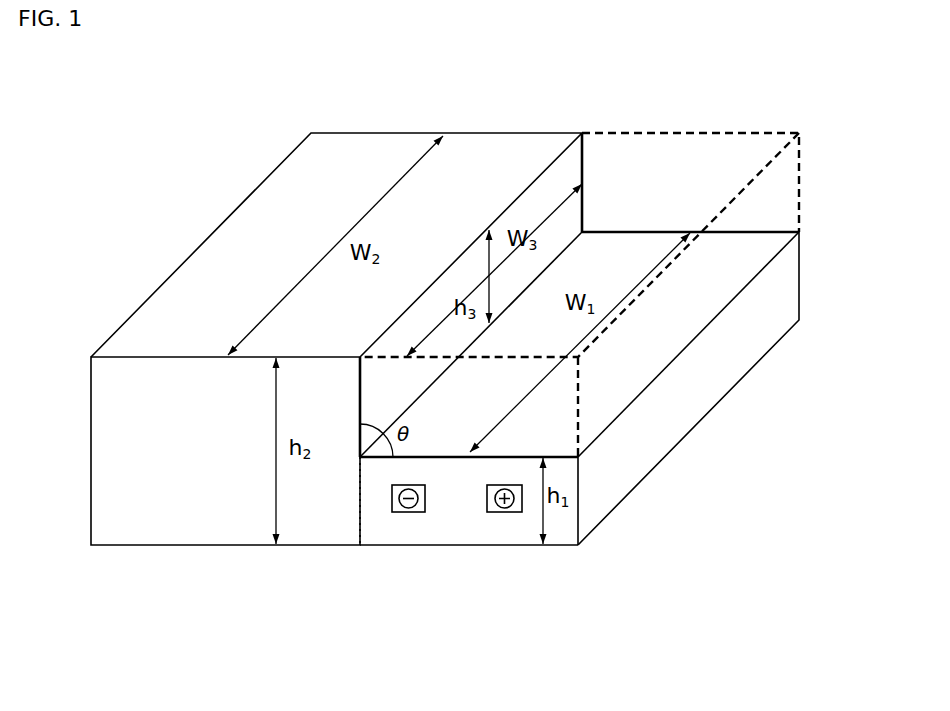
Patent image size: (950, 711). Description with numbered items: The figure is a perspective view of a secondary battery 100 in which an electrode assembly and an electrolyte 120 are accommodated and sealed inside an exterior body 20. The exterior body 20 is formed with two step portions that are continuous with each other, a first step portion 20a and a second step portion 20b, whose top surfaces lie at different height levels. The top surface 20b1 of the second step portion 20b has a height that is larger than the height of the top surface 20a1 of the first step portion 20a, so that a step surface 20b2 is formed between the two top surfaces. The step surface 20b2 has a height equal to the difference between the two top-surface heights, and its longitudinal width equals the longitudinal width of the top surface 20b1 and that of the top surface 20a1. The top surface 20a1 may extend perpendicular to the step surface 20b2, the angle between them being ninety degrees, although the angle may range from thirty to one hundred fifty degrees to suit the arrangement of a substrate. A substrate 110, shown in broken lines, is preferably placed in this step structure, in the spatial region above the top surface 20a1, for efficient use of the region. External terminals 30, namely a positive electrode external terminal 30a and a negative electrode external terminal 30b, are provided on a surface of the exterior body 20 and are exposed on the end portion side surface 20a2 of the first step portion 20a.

The secondary battery 100 is at (503, 105).
The substrate 110 is at (703, 132).
The electrolyte 120 is at (145, 520).
The exterior body 20 is at (660, 348).
The first step portion 20a is at (488, 532).
The second step portion 20b is at (230, 523).
The top surface of the first step portion 20a1 is at (567, 438).
The end portion side surface of the first step portion 20a2 is at (392, 523).
The top surface of the second step portion 20b1 is at (168, 340).
The step surface 20b2 is at (362, 432).
The external terminals 30 is at (413, 657).
The positive electrode external terminal 30a is at (504, 512).
The negative electrode external terminal 30b is at (408, 512).